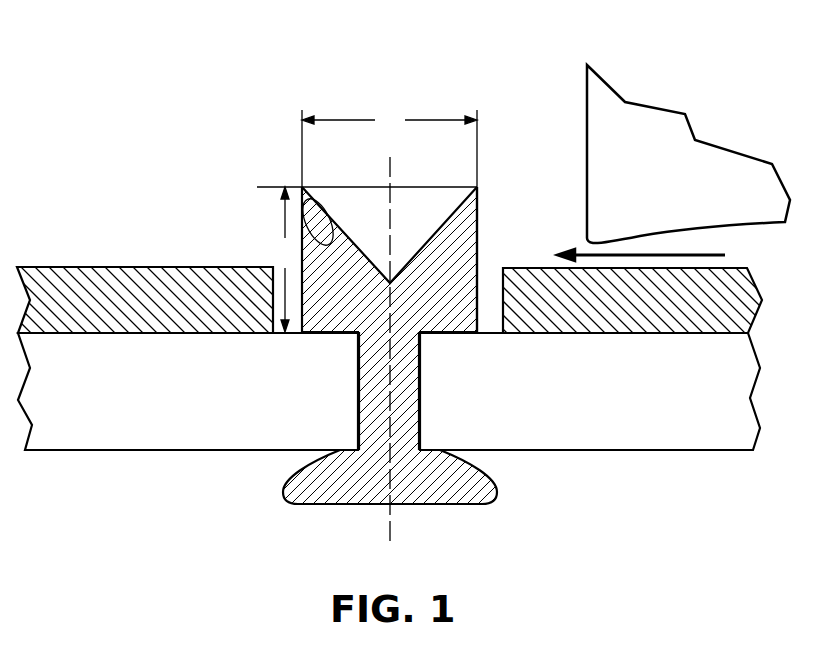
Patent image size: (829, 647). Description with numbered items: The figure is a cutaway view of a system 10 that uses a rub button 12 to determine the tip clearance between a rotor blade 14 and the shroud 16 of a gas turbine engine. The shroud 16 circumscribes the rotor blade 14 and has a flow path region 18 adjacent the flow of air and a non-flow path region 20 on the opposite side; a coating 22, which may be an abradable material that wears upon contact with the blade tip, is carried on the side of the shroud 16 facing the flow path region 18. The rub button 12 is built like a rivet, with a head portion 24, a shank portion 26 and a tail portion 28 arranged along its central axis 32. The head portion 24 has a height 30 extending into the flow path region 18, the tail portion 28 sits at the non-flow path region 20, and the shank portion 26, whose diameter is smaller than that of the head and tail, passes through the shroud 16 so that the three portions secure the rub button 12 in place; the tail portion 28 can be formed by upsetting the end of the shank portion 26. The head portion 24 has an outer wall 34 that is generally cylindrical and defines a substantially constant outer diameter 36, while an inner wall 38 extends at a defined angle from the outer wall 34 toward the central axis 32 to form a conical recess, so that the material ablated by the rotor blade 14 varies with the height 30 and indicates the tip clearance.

The system 10 is at (128, 92).
The rub button 12 is at (478, 208).
The rotor blade 14 is at (672, 132).
The shroud 16 is at (672, 418).
The flow path region 18 is at (124, 161).
The non-flow path region 20 is at (150, 505).
The coating 22 is at (78, 282).
The head portion 24 is at (497, 228).
The shank portion 26 is at (430, 405).
The tail portion 28 is at (467, 515).
The height 30 is at (367, 259).
The central axis 32 is at (389, 521).
The outer wall 34 is at (490, 262).
The outer diameter 36 is at (389, 147).
The inner wall 38 is at (425, 230).